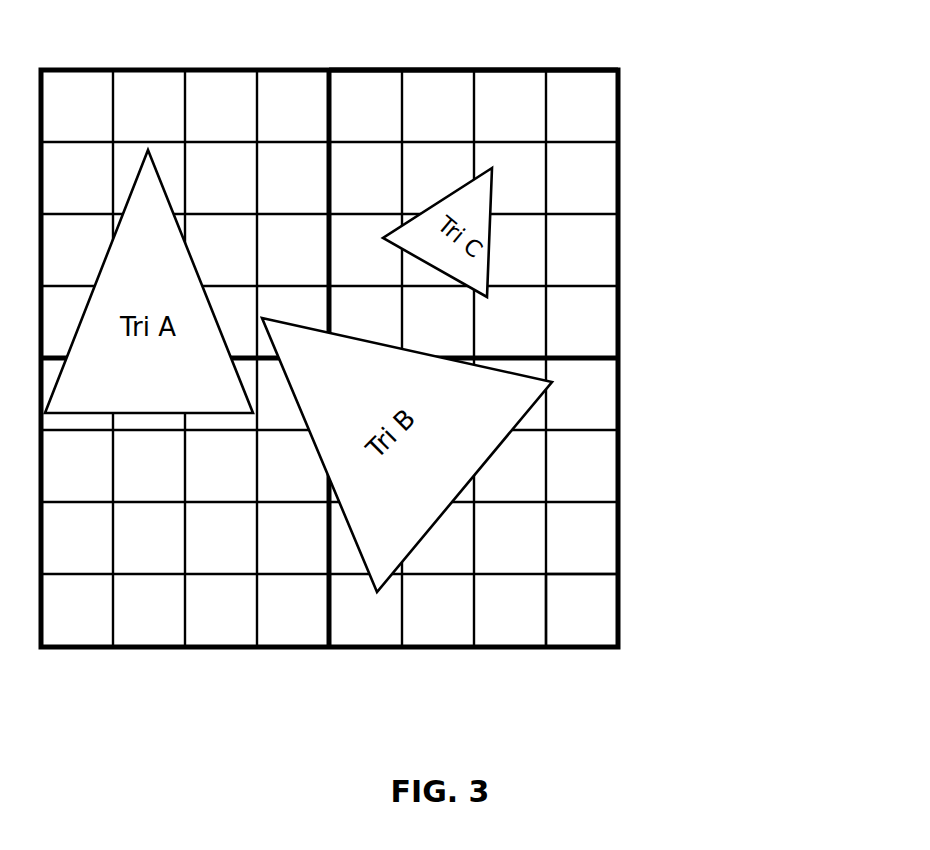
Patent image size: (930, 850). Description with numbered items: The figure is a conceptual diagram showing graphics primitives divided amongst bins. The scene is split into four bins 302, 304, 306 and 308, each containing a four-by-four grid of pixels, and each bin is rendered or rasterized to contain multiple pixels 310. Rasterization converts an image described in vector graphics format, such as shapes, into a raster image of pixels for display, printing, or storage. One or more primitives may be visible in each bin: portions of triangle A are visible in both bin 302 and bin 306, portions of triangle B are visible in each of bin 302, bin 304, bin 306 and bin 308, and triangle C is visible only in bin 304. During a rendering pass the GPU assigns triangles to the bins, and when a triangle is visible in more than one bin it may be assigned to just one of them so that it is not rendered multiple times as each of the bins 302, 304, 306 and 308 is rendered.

The bin 302 is at (153, 68).
The bin 304 is at (418, 68).
The bin 306 is at (222, 650).
The bin 308 is at (383, 650).
The pixel 310 is at (597, 628).